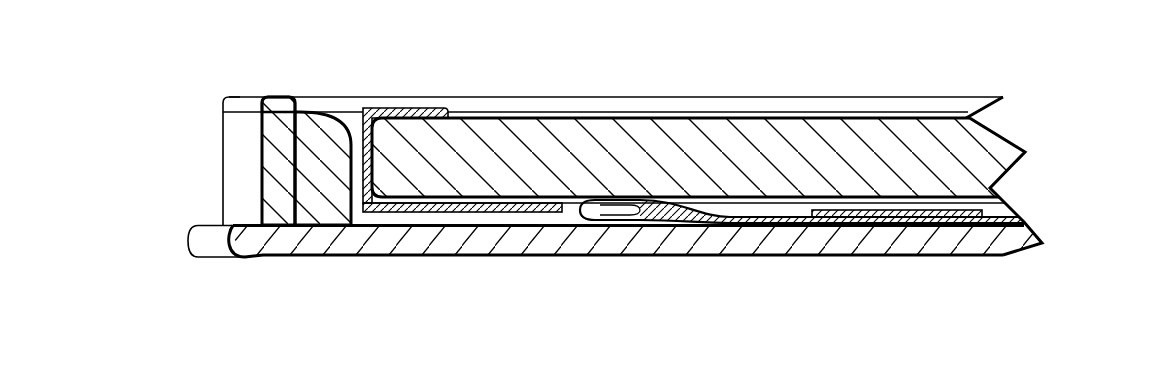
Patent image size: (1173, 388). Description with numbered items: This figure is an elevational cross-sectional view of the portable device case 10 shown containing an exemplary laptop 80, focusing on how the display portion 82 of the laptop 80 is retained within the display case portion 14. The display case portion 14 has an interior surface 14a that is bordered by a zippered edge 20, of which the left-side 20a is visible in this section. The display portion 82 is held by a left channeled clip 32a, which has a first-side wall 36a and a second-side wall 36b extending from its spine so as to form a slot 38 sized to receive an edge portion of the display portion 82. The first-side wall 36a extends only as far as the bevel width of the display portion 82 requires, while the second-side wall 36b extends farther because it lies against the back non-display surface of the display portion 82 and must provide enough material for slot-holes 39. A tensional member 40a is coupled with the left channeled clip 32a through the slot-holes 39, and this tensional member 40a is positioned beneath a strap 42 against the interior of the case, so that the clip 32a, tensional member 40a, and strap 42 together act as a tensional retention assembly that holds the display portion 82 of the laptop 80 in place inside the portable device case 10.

The portable device case 10 is at (233, 328).
The display case portion 14 is at (373, 312).
The interior surface 14a is at (352, 123).
The zippered edge 20 is at (280, 96).
The left-side 20a is at (262, 125).
The left channeled clip 32a is at (429, 88).
The first-side wall 36a is at (403, 108).
The second-side wall 36b is at (482, 212).
The slot 38 is at (438, 162).
The slot-holes 39 is at (573, 212).
The tensional member 40a is at (776, 228).
The strap 42 is at (850, 212).
The exemplary laptop 80 is at (837, 132).
The display portion 82 is at (758, 111).